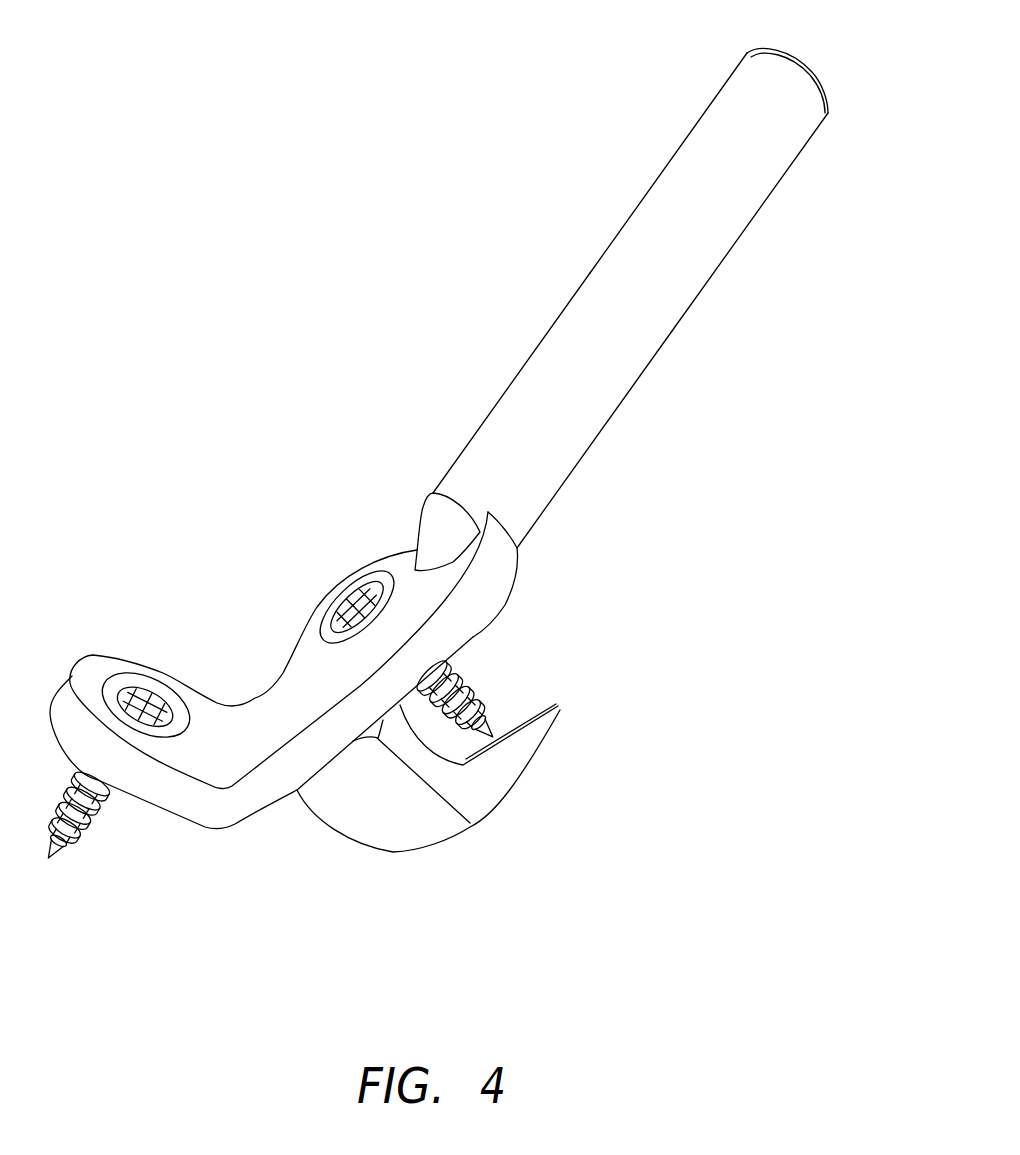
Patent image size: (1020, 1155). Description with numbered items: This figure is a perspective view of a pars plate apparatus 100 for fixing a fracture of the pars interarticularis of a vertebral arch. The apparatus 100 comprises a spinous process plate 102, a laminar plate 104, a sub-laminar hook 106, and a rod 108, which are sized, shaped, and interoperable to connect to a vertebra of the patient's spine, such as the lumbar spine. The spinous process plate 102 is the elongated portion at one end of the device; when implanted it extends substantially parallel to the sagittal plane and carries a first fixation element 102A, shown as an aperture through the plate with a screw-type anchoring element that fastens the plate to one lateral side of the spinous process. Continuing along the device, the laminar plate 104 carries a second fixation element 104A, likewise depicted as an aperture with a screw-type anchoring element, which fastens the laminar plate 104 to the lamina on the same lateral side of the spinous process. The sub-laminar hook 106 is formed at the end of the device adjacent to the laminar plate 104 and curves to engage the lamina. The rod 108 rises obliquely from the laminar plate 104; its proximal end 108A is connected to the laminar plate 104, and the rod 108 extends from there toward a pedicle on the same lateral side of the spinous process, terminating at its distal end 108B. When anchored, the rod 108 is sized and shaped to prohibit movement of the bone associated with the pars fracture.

The pars plate apparatus 100 is at (453, 86).
The spinous process plate 102 is at (117, 657).
The first fixation element 102A is at (85, 843).
The laminar plate 104 is at (293, 653).
The second fixation element 104A is at (483, 687).
The sub-laminar hook 106 is at (527, 760).
The rod 108 is at (622, 223).
The proximal end 108A is at (500, 443).
The distal end 108B is at (773, 60).